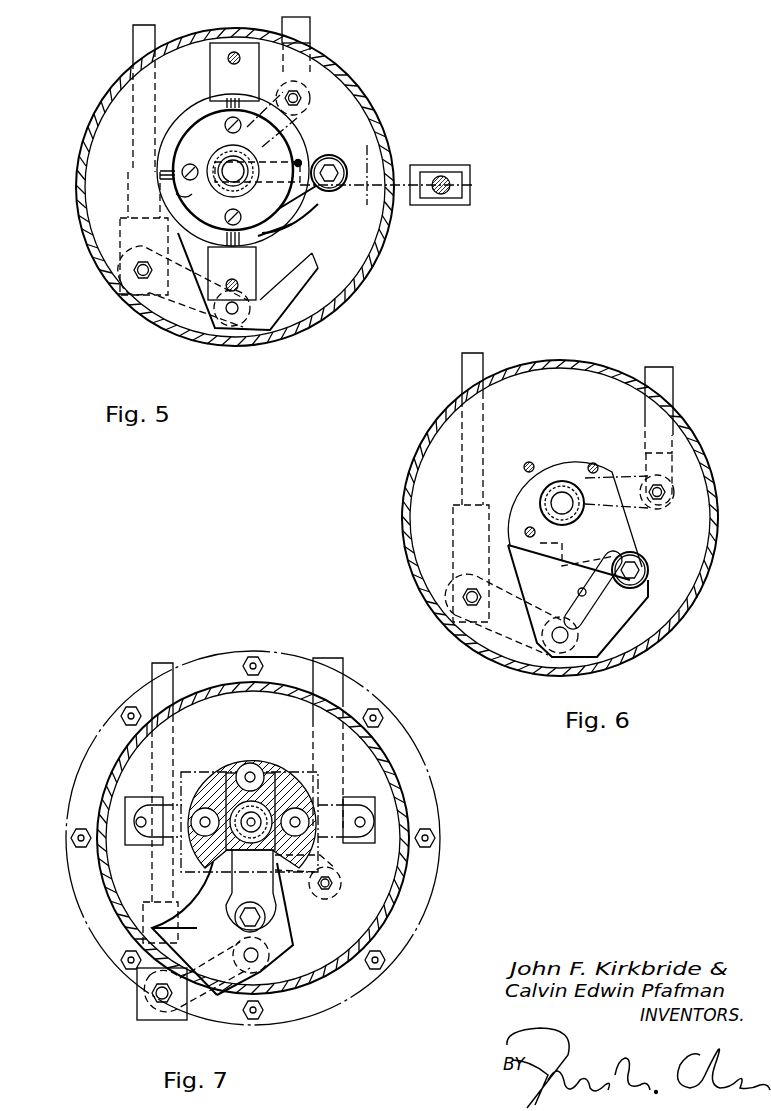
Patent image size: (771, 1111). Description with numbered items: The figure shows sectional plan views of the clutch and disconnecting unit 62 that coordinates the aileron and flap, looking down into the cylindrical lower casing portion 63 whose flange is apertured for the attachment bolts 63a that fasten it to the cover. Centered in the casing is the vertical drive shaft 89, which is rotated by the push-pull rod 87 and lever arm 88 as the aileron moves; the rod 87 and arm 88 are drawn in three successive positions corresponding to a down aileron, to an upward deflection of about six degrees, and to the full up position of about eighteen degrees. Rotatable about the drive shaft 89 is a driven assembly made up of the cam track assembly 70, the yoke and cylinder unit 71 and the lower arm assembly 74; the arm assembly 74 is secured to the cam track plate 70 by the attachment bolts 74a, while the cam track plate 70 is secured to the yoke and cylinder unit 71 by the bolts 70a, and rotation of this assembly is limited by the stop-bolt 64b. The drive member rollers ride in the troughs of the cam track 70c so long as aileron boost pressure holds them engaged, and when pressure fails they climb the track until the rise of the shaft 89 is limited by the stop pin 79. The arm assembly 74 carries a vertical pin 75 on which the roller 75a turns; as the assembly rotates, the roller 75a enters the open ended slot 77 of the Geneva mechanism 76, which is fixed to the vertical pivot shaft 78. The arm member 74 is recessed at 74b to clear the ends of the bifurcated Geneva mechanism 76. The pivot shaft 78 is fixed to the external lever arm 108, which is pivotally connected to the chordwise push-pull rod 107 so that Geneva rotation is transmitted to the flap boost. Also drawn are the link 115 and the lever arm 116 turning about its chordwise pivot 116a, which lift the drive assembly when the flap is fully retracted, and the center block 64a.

In FIG. 5, the clutch and disconnecting unit 62 is at (74, 187).
In FIG. 6, the clutch and disconnecting unit 62 is at (409, 463).
In FIG. 7, the clutch and disconnecting unit 62 is at (98, 768).
In FIG. 5, the lower casing portion 63 is at (87, 232).
In FIG. 6, the lower casing portion 63 is at (406, 505).
In FIG. 7, the lower casing portion 63 is at (98, 866).
In FIG. 7, the attachment bolts 63a is at (384, 712).
In FIG. 7, the center block 64a is at (186, 772).
In FIG. 7, the stop-bolt 64b is at (332, 897).
In FIG. 5, the cam track assembly 70 is at (210, 84).
In FIG. 5, the bolts 70a is at (227, 60).
In FIG. 5, the cam track 70c is at (183, 197).
In FIG. 7, the yoke and cylinder unit 71 is at (356, 797).
In FIG. 5, the lower arm assembly 74 is at (314, 210).
In FIG. 6, the lower arm assembly 74 is at (566, 437).
In FIG. 7, the lower arm assembly 74 is at (244, 764).
In FIG. 5, the attachment bolts 74a is at (226, 122).
In FIG. 6, the attachment bolts 74a is at (526, 462).
In FIG. 7, the attachment bolts 74a is at (260, 768).
In FIG. 6, the recess 74b is at (566, 546).
In FIG. 7, the recess 74b is at (214, 872).
In FIG. 5, the vertical pin 75 is at (332, 164).
In FIG. 6, the vertical pin 75 is at (640, 564).
In FIG. 7, the vertical pin 75 is at (262, 918).
In FIG. 5, the roller 75a is at (340, 190).
In FIG. 6, the roller 75a is at (648, 574).
In FIG. 7, the roller 75a is at (266, 930).
In FIG. 5, the Geneva mechanism 76 is at (312, 272).
In FIG. 6, the Geneva mechanism 76 is at (645, 600).
In FIG. 7, the Geneva mechanism 76 is at (294, 952).
In FIG. 5, the open ended slot 77 is at (292, 238).
In FIG. 6, the open ended slot 77 is at (578, 592).
In FIG. 7, the open ended slot 77 is at (233, 885).
In FIG. 5, the vertical pivot shaft 78 is at (239, 308).
In FIG. 6, the vertical pivot shaft 78 is at (570, 638).
In FIG. 7, the vertical pivot shaft 78 is at (258, 960).
In FIG. 5, the stop pin 79 is at (294, 165).
In FIG. 5, the push-pull rod 87 is at (311, 33).
In FIG. 6, the push-pull rod 87 is at (674, 381).
In FIG. 7, the push-pull rod 87 is at (344, 668).
In FIG. 5, the lever arm 88 is at (306, 112).
In FIG. 6, the lever arm 88 is at (652, 510).
In FIG. 7, the lever arm 88 is at (330, 860).
In FIG. 5, the drive shaft 89 is at (226, 162).
In FIG. 6, the drive shaft 89 is at (540, 504).
In FIG. 7, the drive shaft 89 is at (252, 845).
In FIG. 5, the push-pull rod 107 is at (133, 32).
In FIG. 6, the push-pull rod 107 is at (486, 358).
In FIG. 7, the push-pull rod 107 is at (152, 670).
In FIG. 5, the external lever arm 108 is at (178, 312).
In FIG. 6, the external lever arm 108 is at (505, 640).
In FIG. 7, the external lever arm 108 is at (200, 1018).
In FIG. 5, the link 115 is at (443, 194).
In FIG. 5, the lever arm 116 is at (446, 165).
In FIG. 5, the chordwise pivot 116a is at (376, 154).